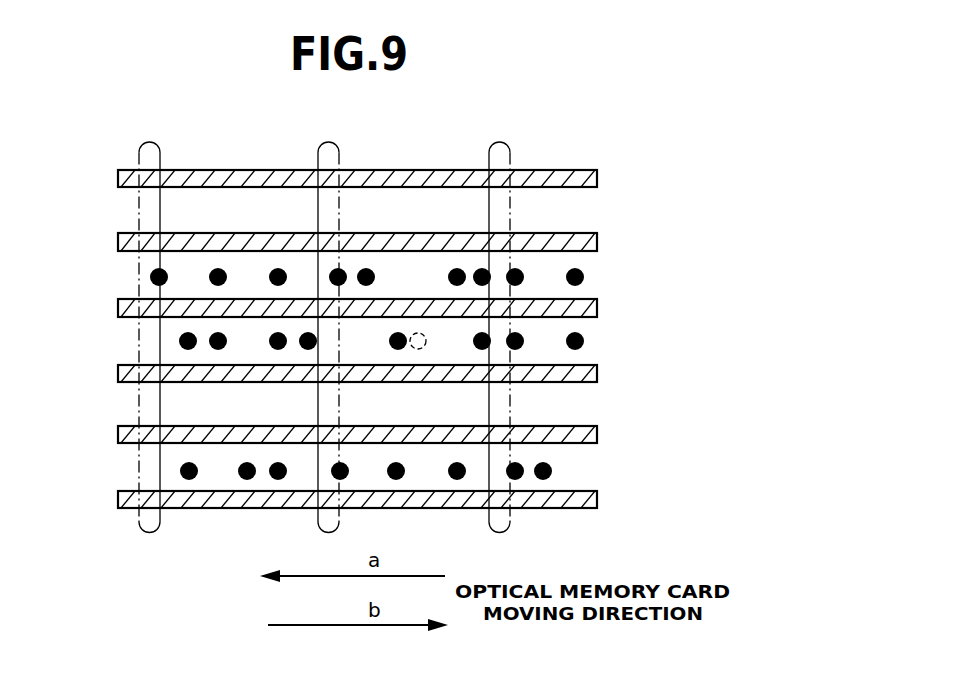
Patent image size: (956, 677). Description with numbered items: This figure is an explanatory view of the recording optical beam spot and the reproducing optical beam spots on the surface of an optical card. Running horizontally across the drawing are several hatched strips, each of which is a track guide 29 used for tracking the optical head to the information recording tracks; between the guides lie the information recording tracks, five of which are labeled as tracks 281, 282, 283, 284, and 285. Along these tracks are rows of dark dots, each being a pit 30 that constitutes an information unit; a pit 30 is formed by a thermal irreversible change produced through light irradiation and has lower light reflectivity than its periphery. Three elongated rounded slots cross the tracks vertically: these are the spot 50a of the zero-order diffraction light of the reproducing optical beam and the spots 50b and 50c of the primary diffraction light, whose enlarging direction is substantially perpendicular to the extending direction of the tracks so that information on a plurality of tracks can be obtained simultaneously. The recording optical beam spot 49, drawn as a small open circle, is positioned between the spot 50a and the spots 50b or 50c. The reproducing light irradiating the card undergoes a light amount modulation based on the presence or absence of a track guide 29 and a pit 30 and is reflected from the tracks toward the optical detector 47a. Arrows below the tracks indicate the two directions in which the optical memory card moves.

The track 281 is at (135, 226).
The track 282 is at (355, 286).
The track 283 is at (348, 368).
The track 284 is at (132, 413).
The track 285 is at (132, 475).
The track guide 29 is at (117, 373).
The pit 30 is at (583, 275).
The recording optical beam spot 49 is at (427, 340).
The optical detector 47a is at (378, 306).
The spot of the O-order diffraction light of the reproducing optical beam 50a is at (338, 207).
The spot of the primary diffraction light of the reproducing optical beam 50b is at (510, 207).
The spot of the primary diffraction light of the reproducing optical beam 50c is at (160, 210).